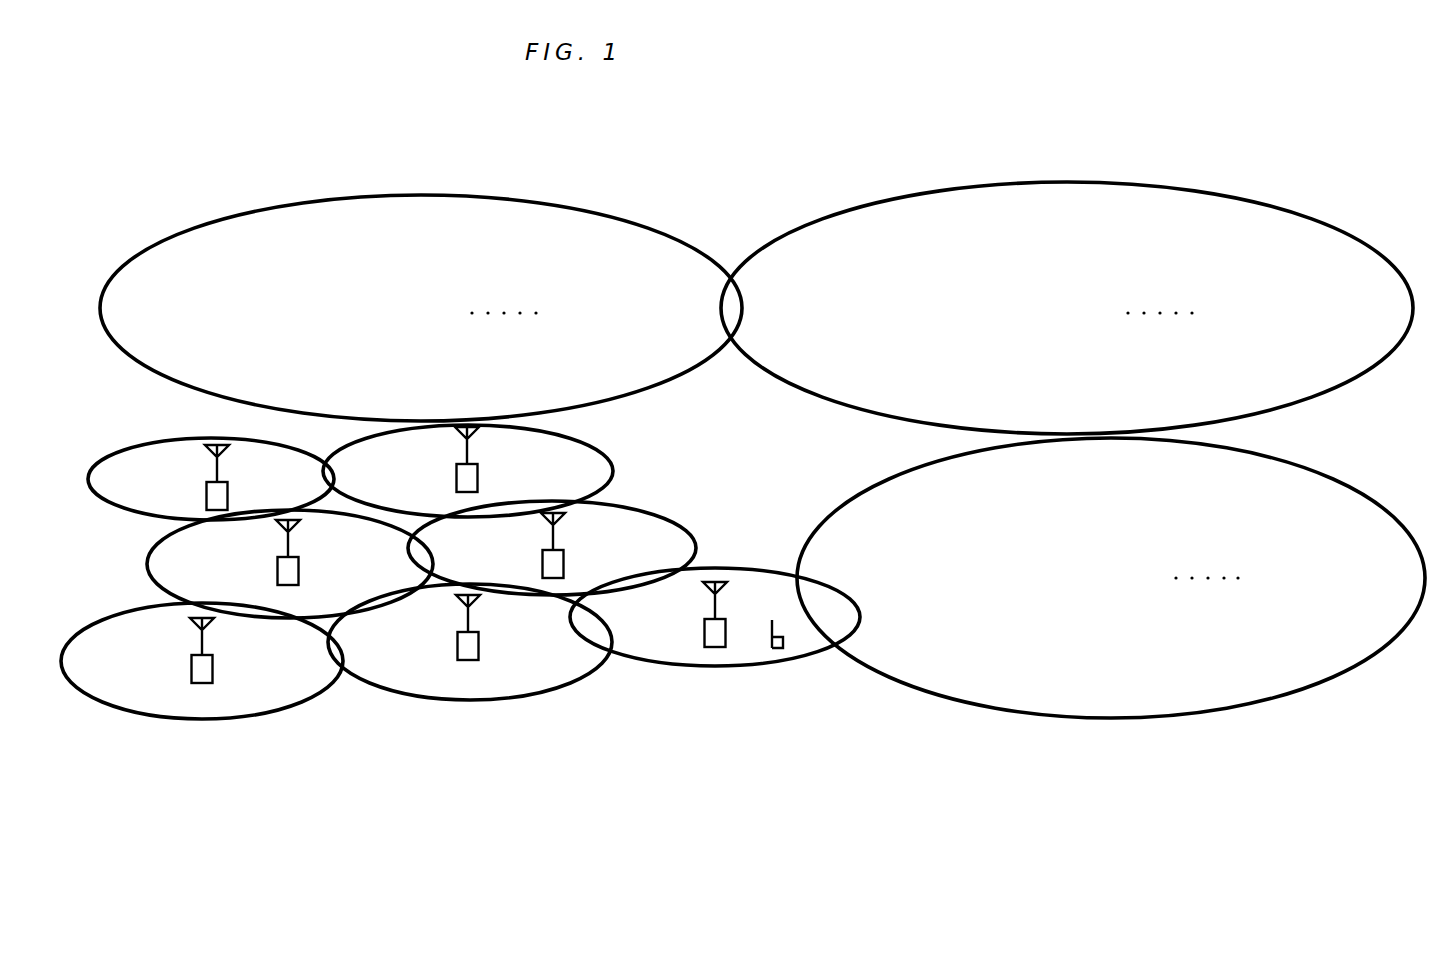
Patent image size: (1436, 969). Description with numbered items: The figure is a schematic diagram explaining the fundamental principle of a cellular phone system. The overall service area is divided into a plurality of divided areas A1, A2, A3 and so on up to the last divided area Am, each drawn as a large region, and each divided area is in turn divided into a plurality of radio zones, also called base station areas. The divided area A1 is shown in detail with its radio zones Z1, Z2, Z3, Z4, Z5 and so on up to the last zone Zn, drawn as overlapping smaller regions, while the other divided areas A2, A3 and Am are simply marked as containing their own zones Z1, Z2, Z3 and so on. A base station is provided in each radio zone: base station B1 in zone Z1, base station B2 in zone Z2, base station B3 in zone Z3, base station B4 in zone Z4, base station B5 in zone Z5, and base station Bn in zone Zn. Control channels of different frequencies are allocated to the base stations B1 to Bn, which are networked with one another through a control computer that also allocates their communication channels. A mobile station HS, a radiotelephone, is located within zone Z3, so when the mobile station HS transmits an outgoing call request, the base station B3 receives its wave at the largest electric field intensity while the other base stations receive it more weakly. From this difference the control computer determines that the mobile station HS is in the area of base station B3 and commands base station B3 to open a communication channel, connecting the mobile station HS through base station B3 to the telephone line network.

The divided area A1 is at (600, 777).
The divided area A2 is at (678, 388).
The divided area A3 is at (1358, 378).
The divided area Am is at (1353, 660).
The radio zone Z1 is at (202, 695).
The radio zone Z2 is at (470, 676).
The radio zone Z3 is at (715, 653).
The radio zone Z4 is at (579, 548).
The radio zone Z5 is at (261, 564).
The radio zone Zn is at (503, 471).
The base station B1 is at (192, 670).
The base station B2 is at (457, 641).
The base station B3 is at (705, 628).
The base station B4 is at (565, 565).
The base station B5 is at (298, 570).
The base station Bn is at (478, 477).
The mobile station HS is at (783, 640).